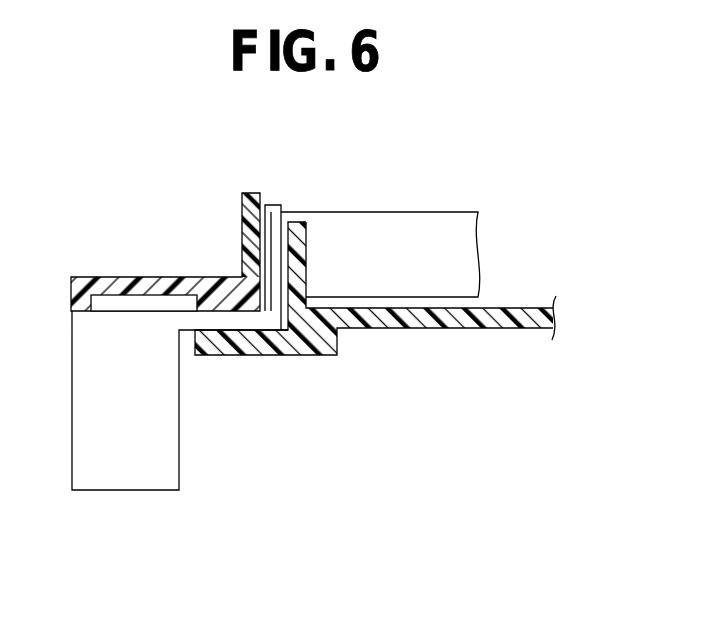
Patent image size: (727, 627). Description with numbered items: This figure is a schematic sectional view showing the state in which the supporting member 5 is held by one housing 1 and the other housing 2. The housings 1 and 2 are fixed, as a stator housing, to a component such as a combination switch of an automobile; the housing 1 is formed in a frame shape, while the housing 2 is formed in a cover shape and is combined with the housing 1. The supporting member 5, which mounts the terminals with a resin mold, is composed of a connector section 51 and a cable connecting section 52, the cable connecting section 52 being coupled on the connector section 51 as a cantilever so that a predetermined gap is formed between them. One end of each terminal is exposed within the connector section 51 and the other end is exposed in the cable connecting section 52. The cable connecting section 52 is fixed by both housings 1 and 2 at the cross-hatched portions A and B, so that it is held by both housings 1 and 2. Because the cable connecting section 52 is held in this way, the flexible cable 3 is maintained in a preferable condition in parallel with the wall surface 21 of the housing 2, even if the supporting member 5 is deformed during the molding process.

The housing 1 is at (113, 272).
The cross-hatched portion A is at (217, 275).
The cable connecting section 52 is at (273, 205).
The flexible cable 3 is at (404, 225).
The wall surface 21 is at (523, 307).
The housing 2 is at (387, 305).
The cross-hatched portion B is at (244, 350).
The connector section 51 is at (172, 456).
The supporting member 5 is at (185, 446).